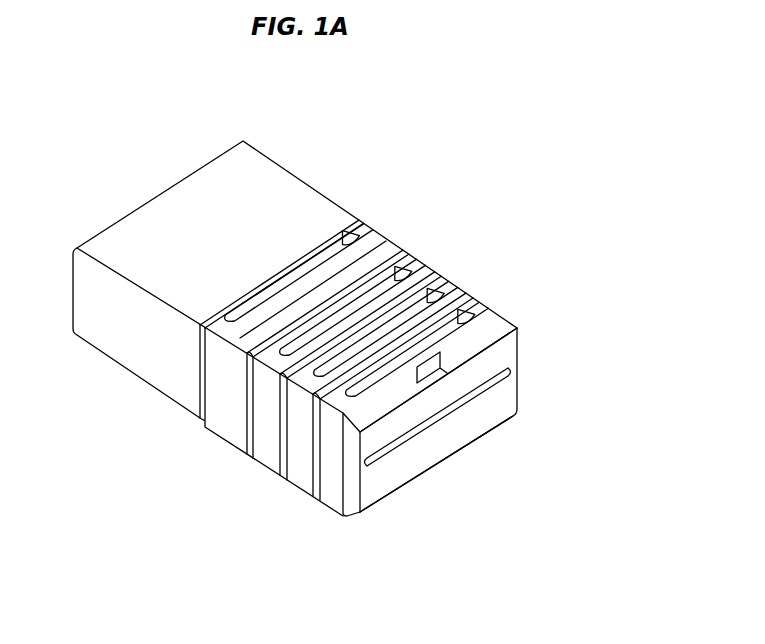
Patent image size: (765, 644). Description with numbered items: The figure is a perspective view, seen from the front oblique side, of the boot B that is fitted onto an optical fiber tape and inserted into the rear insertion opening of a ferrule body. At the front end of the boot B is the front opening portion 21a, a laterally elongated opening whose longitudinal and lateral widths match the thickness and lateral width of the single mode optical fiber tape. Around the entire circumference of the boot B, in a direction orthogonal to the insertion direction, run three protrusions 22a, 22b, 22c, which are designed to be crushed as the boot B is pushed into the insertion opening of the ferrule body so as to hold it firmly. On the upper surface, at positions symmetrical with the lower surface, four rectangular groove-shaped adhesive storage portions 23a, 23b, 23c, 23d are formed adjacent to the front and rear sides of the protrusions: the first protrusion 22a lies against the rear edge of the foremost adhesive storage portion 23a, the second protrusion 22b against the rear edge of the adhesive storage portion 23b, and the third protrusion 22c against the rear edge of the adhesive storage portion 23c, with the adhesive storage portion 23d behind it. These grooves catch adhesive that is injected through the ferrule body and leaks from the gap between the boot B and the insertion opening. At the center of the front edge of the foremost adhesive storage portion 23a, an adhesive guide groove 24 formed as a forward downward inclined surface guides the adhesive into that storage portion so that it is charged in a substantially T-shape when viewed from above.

The boot B is at (357, 182).
The front opening portion 21a is at (452, 408).
The first protrusion 22a is at (317, 497).
The second protrusion 22b is at (280, 458).
The third protrusion 22c is at (247, 427).
The adhesive storage portion 23a is at (470, 307).
The adhesive storage portion 23b is at (455, 276).
The adhesive storage portion 23c is at (422, 258).
The adhesive storage portion 23d is at (384, 236).
The adhesive guide groove 24 is at (445, 368).